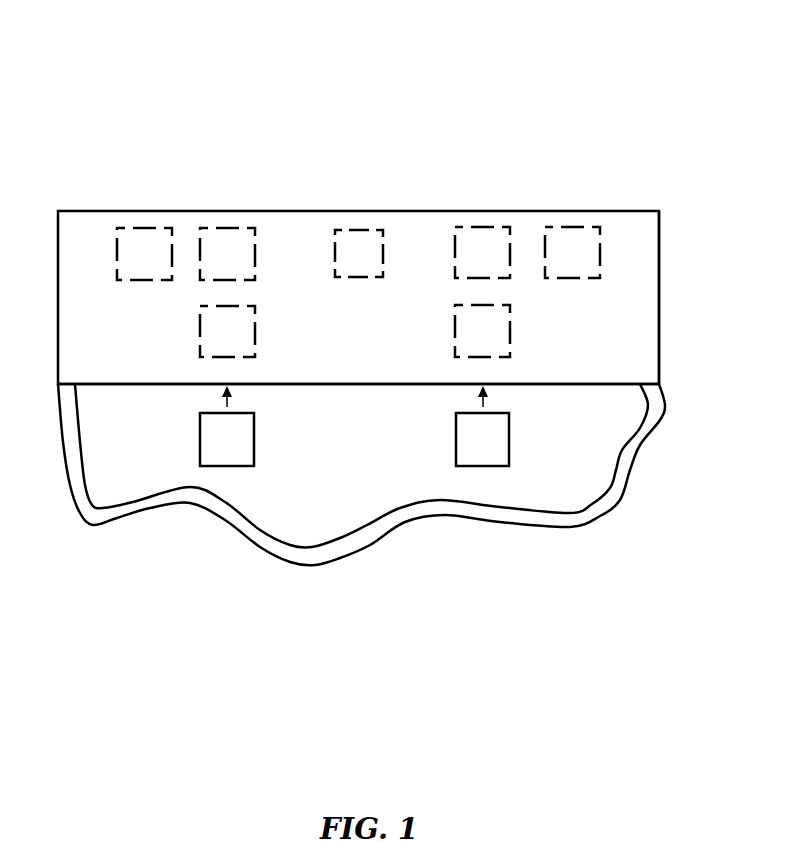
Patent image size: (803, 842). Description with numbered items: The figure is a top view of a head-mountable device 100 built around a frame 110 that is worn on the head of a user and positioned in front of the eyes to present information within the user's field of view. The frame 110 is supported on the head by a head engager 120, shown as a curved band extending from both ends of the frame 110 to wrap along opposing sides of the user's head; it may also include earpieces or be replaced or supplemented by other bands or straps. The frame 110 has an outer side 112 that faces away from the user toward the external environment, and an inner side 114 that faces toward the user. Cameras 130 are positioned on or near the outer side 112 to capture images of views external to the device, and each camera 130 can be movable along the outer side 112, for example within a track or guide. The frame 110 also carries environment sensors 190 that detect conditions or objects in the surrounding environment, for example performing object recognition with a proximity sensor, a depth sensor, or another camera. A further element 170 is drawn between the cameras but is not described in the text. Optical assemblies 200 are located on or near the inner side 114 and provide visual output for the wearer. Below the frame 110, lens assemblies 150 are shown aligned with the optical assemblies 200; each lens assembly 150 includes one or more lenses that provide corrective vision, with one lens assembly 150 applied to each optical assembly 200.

The head-mountable device 100 is at (95, 63).
The frame 110 is at (77, 210).
The outer side 112 is at (642, 210).
The inner side 114 is at (367, 385).
The head engager 120 is at (624, 500).
The camera 130 is at (218, 227).
The lens assembly 150 is at (199, 446).
The controller 170 is at (360, 229).
The environment sensor 190 is at (136, 227).
The optical assembly 200 is at (199, 335).